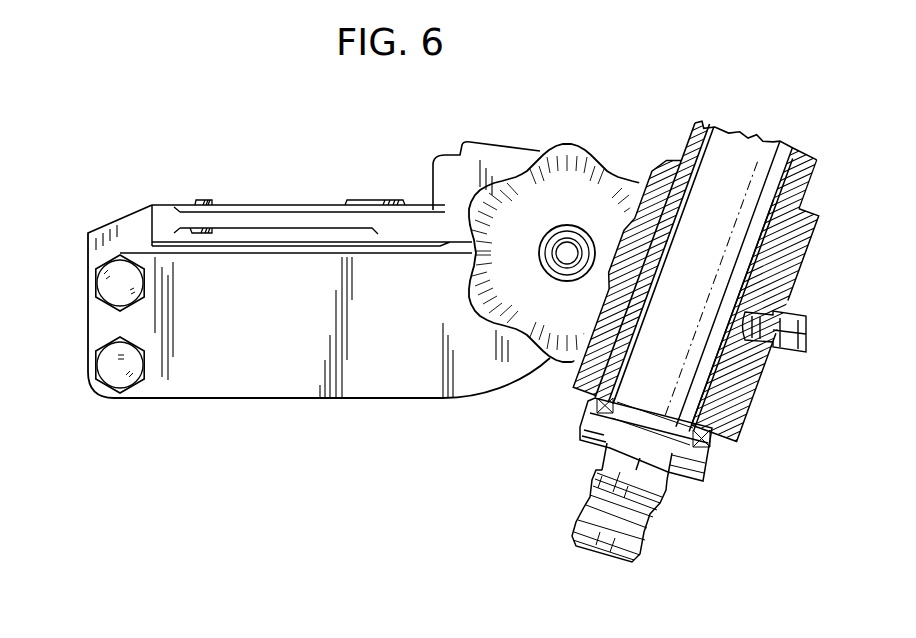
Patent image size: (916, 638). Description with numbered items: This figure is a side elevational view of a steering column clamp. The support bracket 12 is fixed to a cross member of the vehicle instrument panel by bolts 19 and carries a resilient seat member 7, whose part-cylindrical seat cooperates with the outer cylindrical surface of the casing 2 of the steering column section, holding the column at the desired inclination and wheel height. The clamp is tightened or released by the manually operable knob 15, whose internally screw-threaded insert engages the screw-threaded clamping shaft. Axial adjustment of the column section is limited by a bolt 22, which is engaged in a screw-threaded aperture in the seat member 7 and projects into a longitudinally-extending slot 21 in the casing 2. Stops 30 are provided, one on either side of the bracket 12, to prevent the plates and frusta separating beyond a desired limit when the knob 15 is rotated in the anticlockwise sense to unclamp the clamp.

The casing 2 is at (813, 177).
The resilient seat member 7 is at (813, 227).
The support bracket 12 is at (362, 399).
The manually operable knob 15 is at (560, 148).
The bolts 19 is at (127, 370).
The longitudinally-extending slot 21 is at (795, 283).
The bolt 22 is at (812, 324).
The stops 30 is at (242, 243).